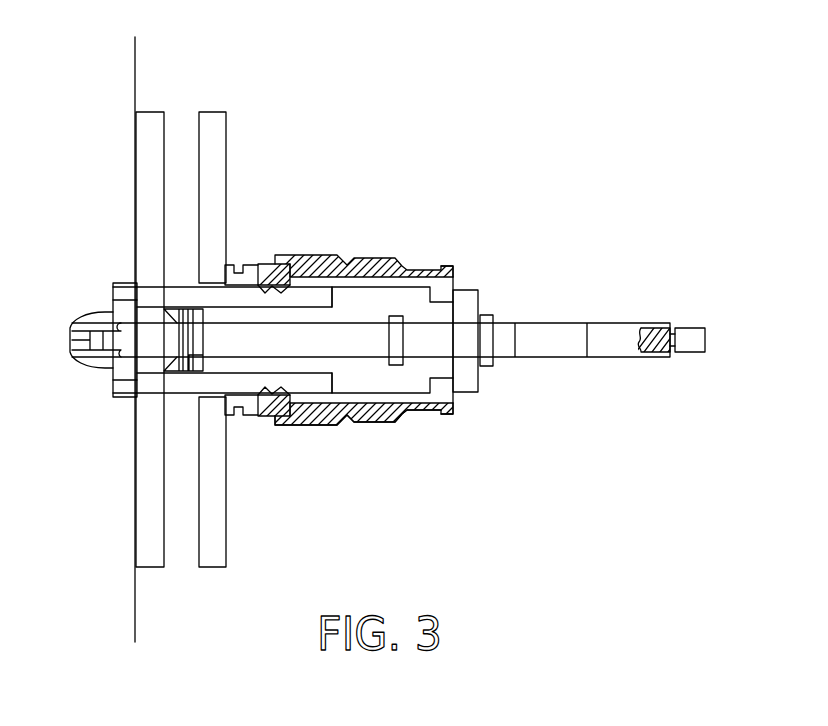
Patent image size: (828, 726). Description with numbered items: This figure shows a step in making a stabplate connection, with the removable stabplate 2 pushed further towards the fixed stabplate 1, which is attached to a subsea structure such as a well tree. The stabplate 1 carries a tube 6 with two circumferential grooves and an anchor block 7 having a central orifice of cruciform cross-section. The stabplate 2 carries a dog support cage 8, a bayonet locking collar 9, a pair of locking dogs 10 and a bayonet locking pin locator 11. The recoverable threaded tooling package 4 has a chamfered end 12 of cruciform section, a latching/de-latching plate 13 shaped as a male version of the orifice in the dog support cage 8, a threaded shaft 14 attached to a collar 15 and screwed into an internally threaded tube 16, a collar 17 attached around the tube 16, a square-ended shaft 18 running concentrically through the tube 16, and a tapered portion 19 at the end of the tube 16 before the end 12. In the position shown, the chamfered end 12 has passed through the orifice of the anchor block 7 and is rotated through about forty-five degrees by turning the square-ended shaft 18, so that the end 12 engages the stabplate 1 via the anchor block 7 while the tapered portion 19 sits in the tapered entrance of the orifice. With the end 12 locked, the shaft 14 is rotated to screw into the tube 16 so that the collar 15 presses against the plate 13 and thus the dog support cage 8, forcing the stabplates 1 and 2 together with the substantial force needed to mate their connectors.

The stabplate 1 is at (152, 568).
The stabplate 2 is at (216, 568).
The threaded tooling package 4 is at (560, 323).
The tube 6 is at (313, 303).
The anchor block 7 is at (121, 283).
The dog support cage 8 is at (455, 281).
The bayonet locking collar 9 is at (376, 425).
The locking dogs 10 is at (265, 416).
The bayonet locking pin locator 11 is at (247, 264).
The chamfered end 12 is at (84, 370).
The latching/de-latching plate 13 is at (468, 393).
The shaft 14 is at (652, 328).
The collar 15 is at (488, 367).
The internally threaded tube 16 is at (352, 323).
The collar 17 is at (395, 365).
The square-ended shaft 18 is at (695, 328).
The tapered portion 19 is at (173, 307).